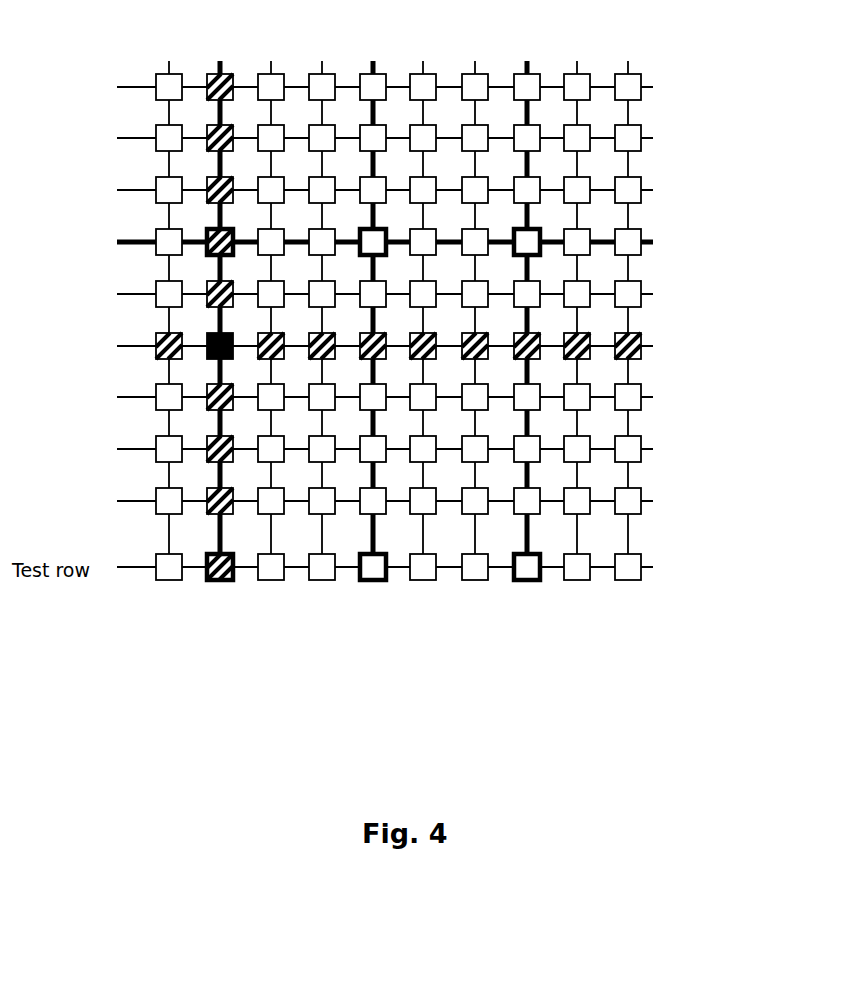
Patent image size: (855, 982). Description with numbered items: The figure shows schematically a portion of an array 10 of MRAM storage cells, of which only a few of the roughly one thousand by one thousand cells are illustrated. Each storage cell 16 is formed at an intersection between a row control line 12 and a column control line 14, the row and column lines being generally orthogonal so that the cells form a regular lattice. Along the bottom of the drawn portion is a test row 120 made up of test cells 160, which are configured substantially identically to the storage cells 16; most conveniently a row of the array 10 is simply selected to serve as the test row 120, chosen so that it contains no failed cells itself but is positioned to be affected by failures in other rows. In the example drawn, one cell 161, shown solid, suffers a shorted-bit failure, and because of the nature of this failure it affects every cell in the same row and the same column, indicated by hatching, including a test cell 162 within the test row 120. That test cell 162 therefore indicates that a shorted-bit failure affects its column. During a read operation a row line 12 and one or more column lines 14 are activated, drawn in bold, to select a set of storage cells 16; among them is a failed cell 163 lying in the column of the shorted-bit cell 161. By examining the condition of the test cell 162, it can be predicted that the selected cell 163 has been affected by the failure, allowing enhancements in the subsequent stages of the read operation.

The array 10 is at (422, 328).
The row control line 12 is at (655, 242).
The column control line 14 is at (375, 61).
The storage cell 16 is at (627, 85).
The test row 120 is at (653, 567).
The test cell 160 is at (476, 566).
The shorted-bit cell 161 is at (208, 336).
The affected test cell 162 is at (230, 578).
The failed selected cell 163 is at (208, 232).